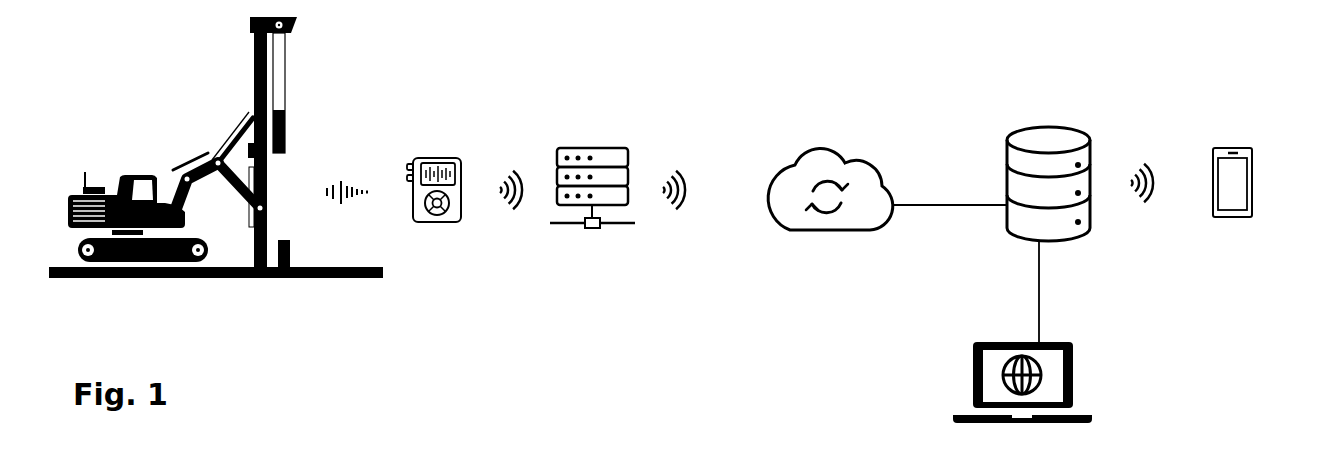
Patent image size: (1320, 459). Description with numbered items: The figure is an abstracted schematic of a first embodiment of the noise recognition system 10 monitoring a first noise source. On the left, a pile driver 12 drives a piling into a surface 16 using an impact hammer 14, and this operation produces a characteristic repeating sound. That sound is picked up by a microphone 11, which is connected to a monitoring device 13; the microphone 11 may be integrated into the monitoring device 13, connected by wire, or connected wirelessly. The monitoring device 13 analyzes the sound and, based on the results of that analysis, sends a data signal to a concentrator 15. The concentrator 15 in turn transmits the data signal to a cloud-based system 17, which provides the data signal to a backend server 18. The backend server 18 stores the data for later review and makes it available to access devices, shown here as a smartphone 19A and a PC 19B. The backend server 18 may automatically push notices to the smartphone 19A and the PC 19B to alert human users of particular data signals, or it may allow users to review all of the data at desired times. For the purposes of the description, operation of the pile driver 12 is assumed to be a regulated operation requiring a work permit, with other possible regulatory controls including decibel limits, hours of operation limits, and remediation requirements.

The noise recognition system 10 is at (672, 328).
The microphone 11 is at (407, 165).
The pile driver 12 is at (133, 137).
The monitoring device 13 is at (443, 158).
The impact hammer 14 is at (287, 128).
The concentrator 15 is at (593, 147).
The surface 16 is at (342, 278).
The cloud-based system 17 is at (820, 148).
The backend server 18 is at (1052, 127).
The smartphone 19A is at (1250, 217).
The PC 19B is at (1092, 413).